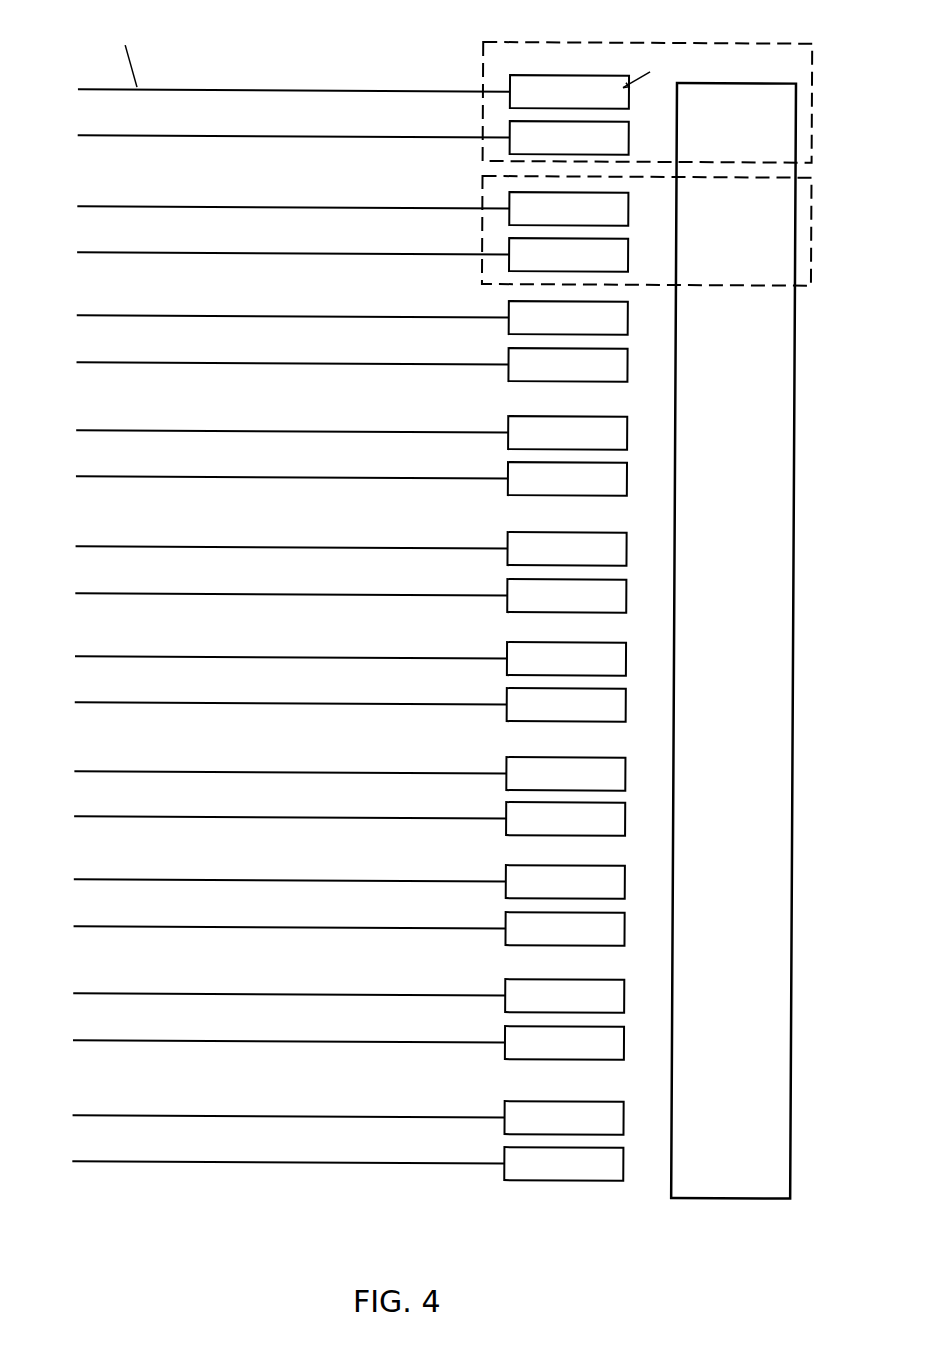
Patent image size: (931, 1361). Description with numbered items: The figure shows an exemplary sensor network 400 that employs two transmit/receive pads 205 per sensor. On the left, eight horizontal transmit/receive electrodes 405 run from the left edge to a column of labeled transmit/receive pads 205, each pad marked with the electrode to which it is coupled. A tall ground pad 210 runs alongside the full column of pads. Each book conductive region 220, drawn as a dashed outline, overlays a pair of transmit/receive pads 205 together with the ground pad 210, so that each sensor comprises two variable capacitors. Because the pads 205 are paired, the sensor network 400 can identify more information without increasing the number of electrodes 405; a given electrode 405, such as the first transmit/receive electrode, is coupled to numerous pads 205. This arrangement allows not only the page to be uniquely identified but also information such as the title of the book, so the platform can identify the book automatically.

The sensor network 400 is at (279, 33).
The transmit/receive electrode 405 is at (107, 93).
The book conductive region 220 is at (603, 164).
The transmit/receive pad 205 is at (622, 253).
The ground pad 210 is at (716, 445).